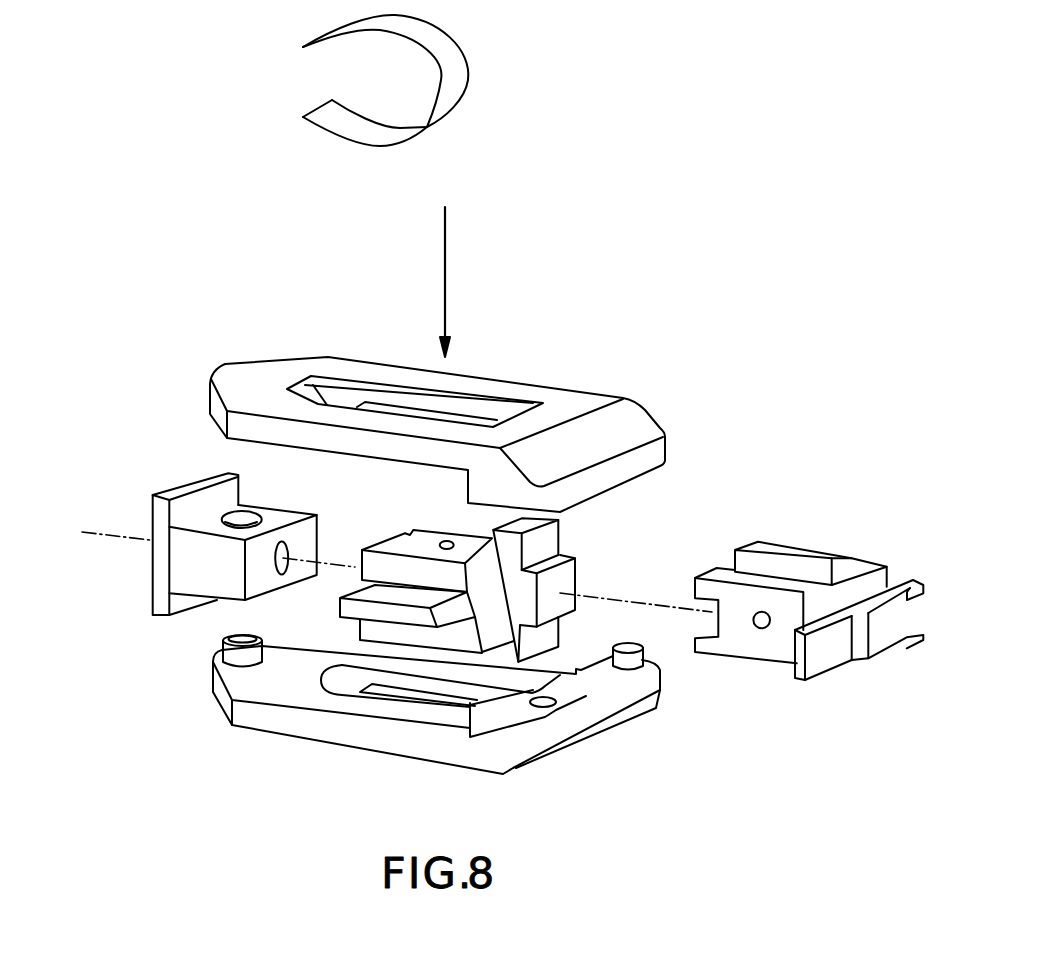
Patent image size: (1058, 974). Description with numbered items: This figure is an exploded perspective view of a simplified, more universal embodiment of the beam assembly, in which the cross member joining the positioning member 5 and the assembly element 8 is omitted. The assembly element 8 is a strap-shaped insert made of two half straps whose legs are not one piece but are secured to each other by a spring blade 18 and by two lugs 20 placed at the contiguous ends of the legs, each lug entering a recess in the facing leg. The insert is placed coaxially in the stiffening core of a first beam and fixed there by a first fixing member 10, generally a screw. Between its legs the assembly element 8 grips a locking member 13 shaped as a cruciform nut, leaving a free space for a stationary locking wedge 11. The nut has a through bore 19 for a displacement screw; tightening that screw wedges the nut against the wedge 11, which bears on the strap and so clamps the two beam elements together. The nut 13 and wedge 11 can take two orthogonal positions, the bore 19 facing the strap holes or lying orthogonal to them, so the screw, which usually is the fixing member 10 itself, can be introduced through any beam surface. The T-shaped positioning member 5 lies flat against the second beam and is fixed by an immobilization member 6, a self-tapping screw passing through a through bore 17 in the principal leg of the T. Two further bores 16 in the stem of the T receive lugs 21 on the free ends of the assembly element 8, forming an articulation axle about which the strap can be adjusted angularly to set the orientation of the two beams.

The positioning member 5 is at (167, 494).
The immobilization member 6 is at (105, 537).
The assembly element 8 is at (571, 400).
The first fixing member 10 is at (456, 348).
The locking wedge 11 is at (570, 552).
The locking member 13 is at (397, 628).
The bores 16 is at (247, 513).
The through bore 17 is at (280, 567).
The spring blade 18 is at (453, 43).
The through bore 19 is at (432, 537).
The lugs 20 is at (630, 660).
The lugs 21 is at (235, 660).